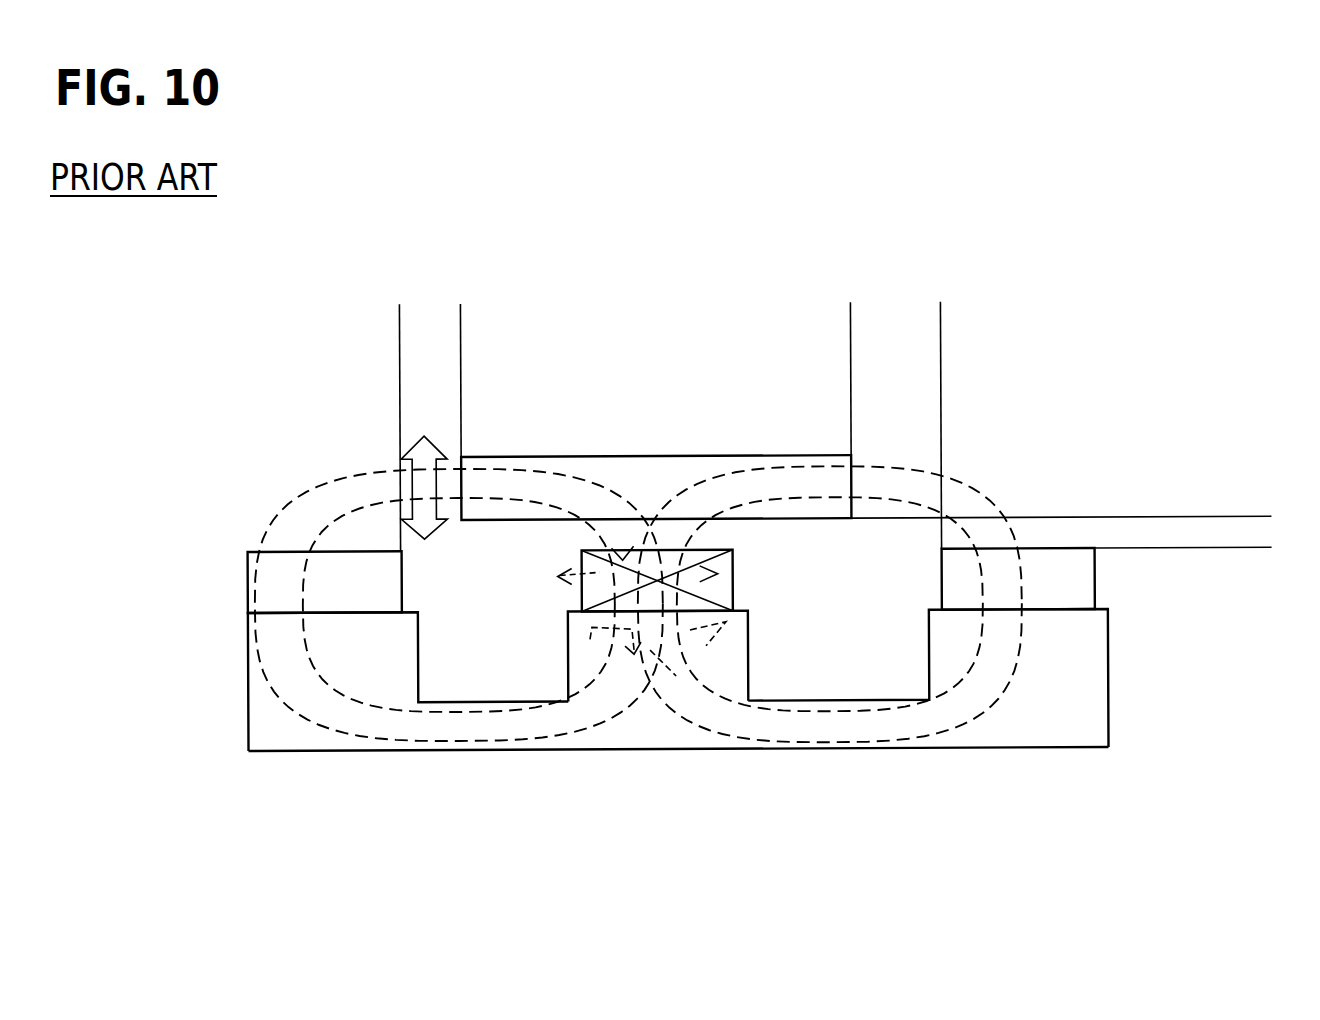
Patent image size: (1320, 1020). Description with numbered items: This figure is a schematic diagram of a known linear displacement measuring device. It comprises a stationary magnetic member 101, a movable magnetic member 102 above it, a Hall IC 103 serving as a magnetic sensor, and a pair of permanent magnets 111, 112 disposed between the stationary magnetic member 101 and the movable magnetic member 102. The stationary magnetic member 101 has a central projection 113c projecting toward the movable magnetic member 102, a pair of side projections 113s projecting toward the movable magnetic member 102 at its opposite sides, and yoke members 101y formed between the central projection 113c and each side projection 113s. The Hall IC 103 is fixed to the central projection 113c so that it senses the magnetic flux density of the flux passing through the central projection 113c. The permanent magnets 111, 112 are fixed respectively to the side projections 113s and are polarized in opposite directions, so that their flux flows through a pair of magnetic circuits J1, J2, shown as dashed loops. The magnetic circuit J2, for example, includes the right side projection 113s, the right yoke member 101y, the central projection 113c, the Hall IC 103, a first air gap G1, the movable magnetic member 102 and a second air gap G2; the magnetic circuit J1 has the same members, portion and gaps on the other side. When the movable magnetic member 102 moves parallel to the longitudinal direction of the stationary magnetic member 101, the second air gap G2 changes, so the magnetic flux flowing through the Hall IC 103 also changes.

The stationary magnetic member 101 is at (675, 720).
The yoke member 101y is at (510, 720).
The movable magnetic member 102 is at (640, 460).
The Hall IC 103 is at (735, 580).
The permanent magnet 111 is at (250, 575).
The permanent magnet 112 is at (1090, 577).
The side projection 113s is at (282, 673).
The central projection 113c is at (748, 655).
The magnetic circuit J1 is at (345, 494).
The magnetic circuit J2 is at (955, 495).
The first air gap G1 is at (1237, 452).
The second air gap G2 is at (462, 318).